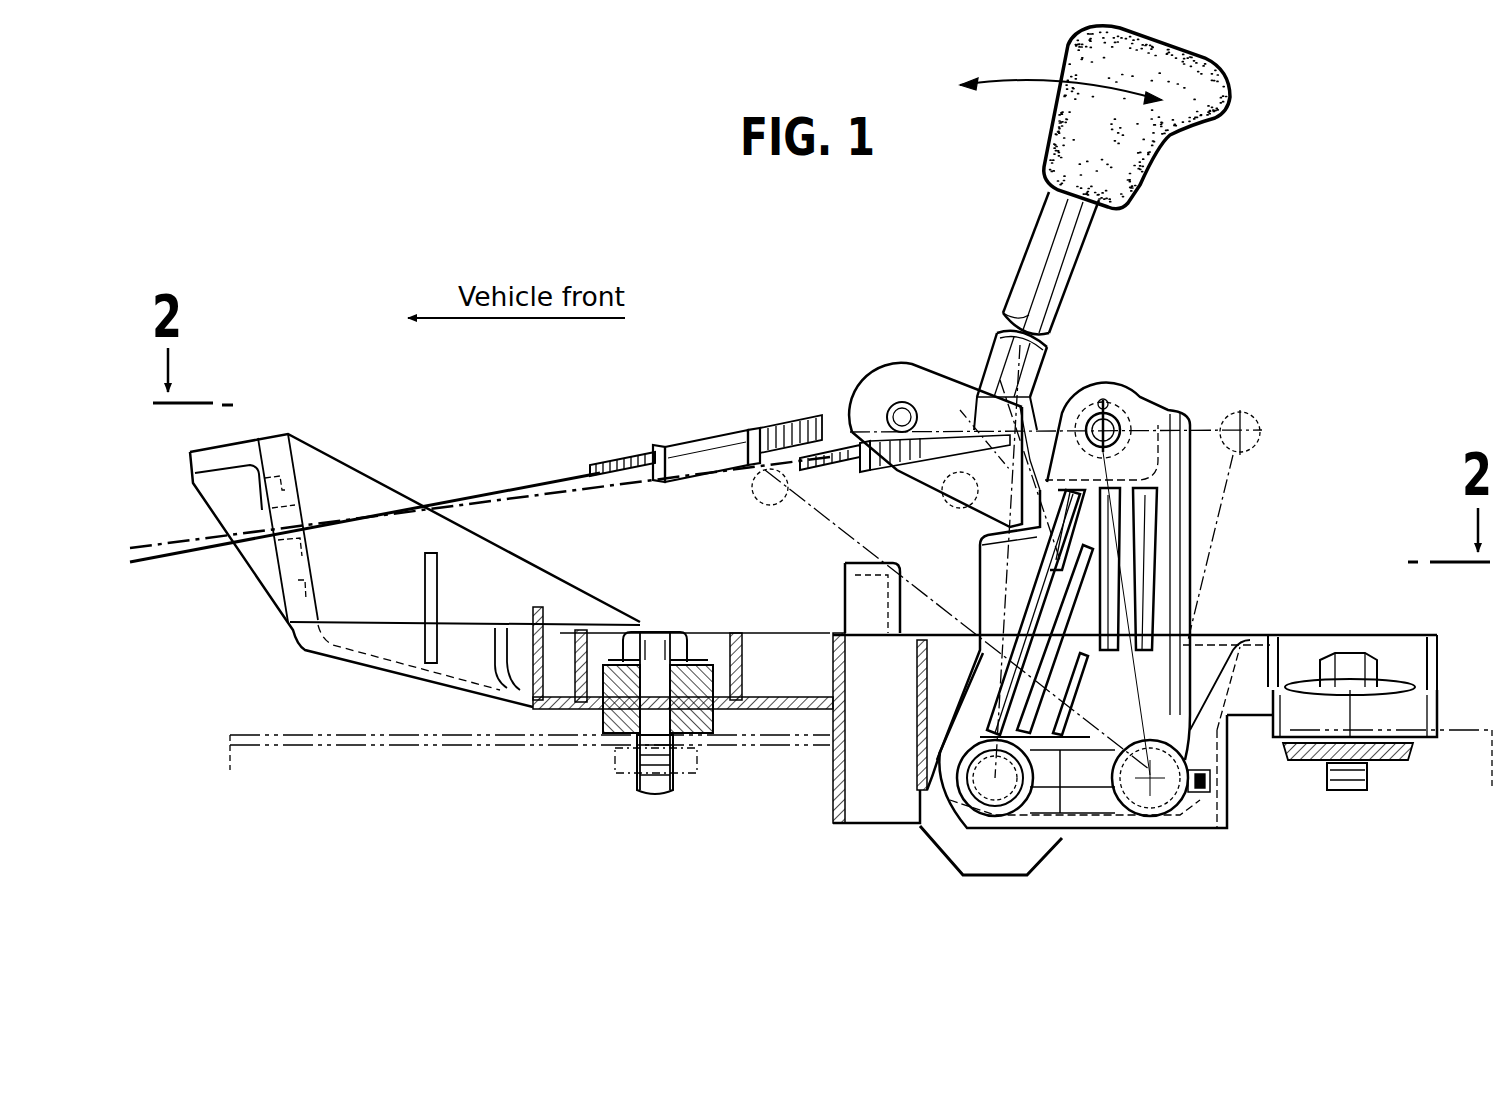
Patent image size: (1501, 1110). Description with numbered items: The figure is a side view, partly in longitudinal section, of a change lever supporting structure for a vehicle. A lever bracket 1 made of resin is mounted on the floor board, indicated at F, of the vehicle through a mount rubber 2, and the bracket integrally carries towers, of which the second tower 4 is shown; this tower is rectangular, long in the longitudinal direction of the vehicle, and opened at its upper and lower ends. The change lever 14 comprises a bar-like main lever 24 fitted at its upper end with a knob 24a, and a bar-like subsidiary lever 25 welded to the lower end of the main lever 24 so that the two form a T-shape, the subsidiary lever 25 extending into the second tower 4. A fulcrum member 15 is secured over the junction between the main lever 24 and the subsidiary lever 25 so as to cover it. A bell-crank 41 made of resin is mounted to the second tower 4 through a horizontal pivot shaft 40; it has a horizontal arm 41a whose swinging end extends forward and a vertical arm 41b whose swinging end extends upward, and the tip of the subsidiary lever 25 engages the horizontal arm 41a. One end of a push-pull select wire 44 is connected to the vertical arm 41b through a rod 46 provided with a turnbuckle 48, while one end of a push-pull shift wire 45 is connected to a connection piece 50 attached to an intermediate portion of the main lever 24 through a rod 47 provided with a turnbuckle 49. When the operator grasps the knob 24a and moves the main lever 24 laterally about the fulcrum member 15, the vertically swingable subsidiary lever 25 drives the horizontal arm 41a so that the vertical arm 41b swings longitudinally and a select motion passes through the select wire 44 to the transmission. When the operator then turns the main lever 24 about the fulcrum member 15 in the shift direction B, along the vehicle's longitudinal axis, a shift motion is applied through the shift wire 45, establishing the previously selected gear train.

The lever bracket 1 is at (360, 665).
The mount rubber 2 is at (608, 737).
The second tower 4 is at (1205, 833).
The change lever 14 is at (1018, 258).
The fulcrum member 15 is at (935, 858).
The main lever 24 is at (1055, 290).
The knob 24a is at (1140, 145).
The subsidiary lever 25 is at (1003, 830).
The horizontal pivot shaft 40 is at (1147, 820).
The bell-crank 41 is at (1142, 384).
The horizontal arm 41a is at (1062, 840).
The vertical arm 41b is at (1184, 590).
The push-pull select wire 44 is at (396, 522).
The push-pull shift wire 45 is at (455, 500).
The rod 46 is at (830, 470).
The rod 47 is at (612, 462).
The turnbuckle 48 is at (882, 472).
The turnbuckle 49 is at (708, 440).
The connection piece 50 is at (905, 378).
The shift direction B is at (1000, 85).
The floor F is at (387, 740).